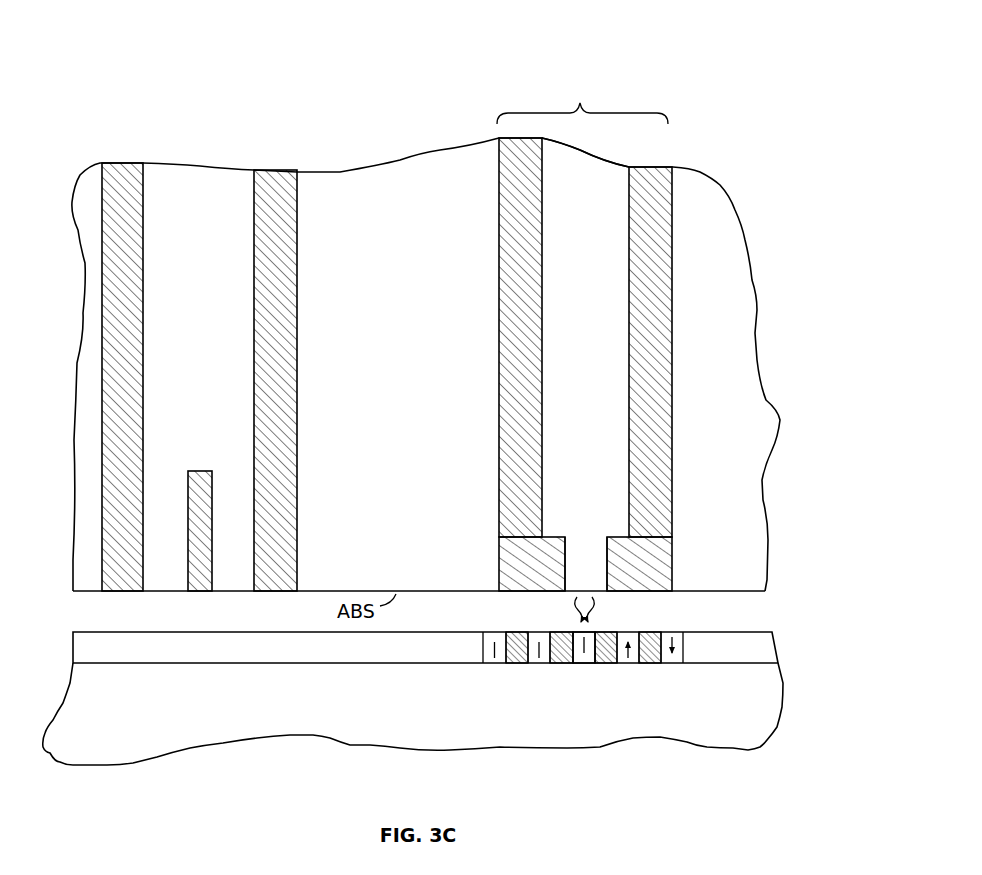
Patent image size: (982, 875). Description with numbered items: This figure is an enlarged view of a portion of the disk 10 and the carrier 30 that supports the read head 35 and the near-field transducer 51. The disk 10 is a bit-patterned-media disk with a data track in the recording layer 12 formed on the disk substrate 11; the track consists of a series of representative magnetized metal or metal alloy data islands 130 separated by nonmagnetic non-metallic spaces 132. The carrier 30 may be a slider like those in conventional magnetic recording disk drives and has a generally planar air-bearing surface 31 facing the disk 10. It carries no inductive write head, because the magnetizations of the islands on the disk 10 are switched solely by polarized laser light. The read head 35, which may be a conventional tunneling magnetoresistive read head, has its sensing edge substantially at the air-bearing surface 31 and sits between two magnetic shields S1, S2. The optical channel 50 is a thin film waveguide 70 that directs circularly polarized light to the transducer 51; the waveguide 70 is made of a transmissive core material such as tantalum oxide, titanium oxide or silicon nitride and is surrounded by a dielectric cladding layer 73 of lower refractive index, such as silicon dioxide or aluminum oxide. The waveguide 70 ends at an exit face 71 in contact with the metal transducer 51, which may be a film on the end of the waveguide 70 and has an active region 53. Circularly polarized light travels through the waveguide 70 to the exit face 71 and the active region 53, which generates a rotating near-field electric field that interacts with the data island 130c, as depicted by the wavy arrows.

The carrier 30 is at (740, 130).
The ABS 31 is at (160, 593).
The magnetic shield S1 is at (103, 300).
The magnetic shield S2 is at (290, 246).
The read head 35 is at (200, 470).
The optical channel 50 is at (582, 103).
The thin film waveguide 70 is at (577, 158).
The dielectric cladding layer 73 is at (515, 480).
The active region 53 is at (575, 562).
The near-field transducer 51 is at (664, 566).
The exit face 71 is at (603, 540).
The disk 10 is at (423, 706).
The disk substrate 11 is at (763, 733).
The recording layer 12 is at (84, 650).
The data islands 130 is at (537, 631).
The nonmagnetic non-metallic spaces 132 is at (560, 664).
The data island 130c is at (582, 664).